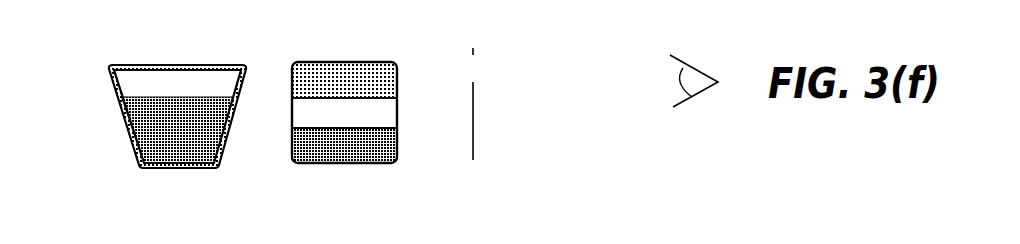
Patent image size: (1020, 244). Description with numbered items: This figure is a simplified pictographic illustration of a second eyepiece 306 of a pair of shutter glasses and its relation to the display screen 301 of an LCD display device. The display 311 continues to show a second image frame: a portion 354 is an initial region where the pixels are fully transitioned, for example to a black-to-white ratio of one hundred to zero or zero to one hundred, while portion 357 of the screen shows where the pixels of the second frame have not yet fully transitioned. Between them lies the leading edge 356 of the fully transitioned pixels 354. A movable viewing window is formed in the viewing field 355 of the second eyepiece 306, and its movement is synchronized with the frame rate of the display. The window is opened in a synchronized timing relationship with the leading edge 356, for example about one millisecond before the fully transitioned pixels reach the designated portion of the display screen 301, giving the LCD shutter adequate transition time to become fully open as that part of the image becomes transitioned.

The LCD display device 301 is at (367, 174).
The second eyepiece 306 is at (184, 186).
The display 311 is at (327, 57).
The portion of fully transitioned pixels 354 is at (292, 78).
The viewing field 355 is at (150, 147).
The leading edge 356 is at (403, 98).
The portion of not yet fully transitioned pixels 357 is at (292, 117).